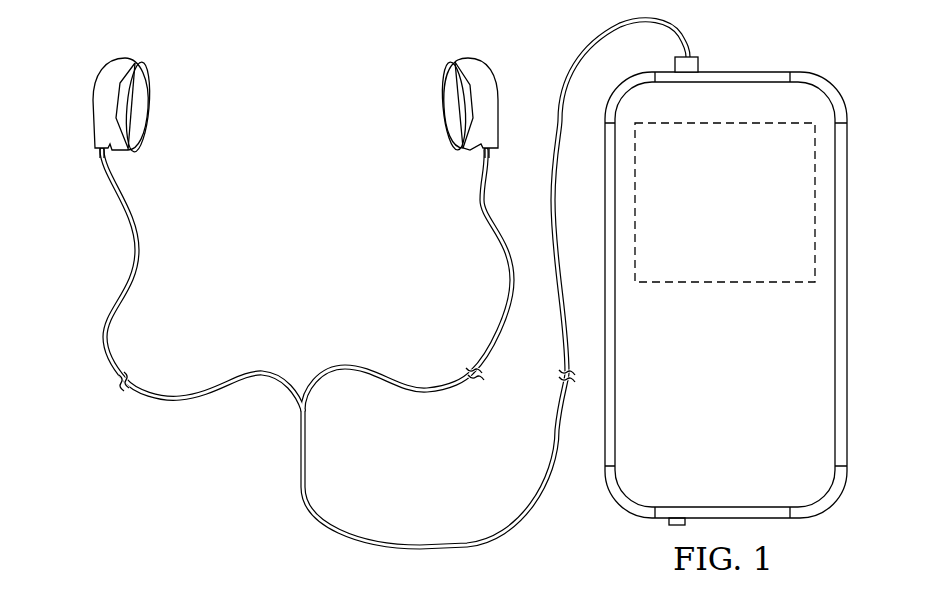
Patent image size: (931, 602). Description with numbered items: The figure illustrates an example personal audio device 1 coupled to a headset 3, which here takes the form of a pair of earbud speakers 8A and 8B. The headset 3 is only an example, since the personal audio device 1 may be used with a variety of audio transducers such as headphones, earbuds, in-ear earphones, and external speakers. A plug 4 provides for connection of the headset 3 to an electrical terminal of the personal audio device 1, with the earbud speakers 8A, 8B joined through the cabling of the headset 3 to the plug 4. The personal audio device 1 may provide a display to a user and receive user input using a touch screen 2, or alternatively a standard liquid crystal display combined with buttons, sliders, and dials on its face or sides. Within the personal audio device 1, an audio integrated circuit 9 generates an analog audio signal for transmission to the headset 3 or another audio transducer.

The personal audio device 1 is at (778, 73).
The touch screen 2 is at (731, 405).
The headset 3 is at (256, 372).
The plug 4 is at (698, 62).
The earbud speaker 8A is at (444, 105).
The earbud speaker 8B is at (93, 102).
The audio integrated circuit 9 is at (750, 283).